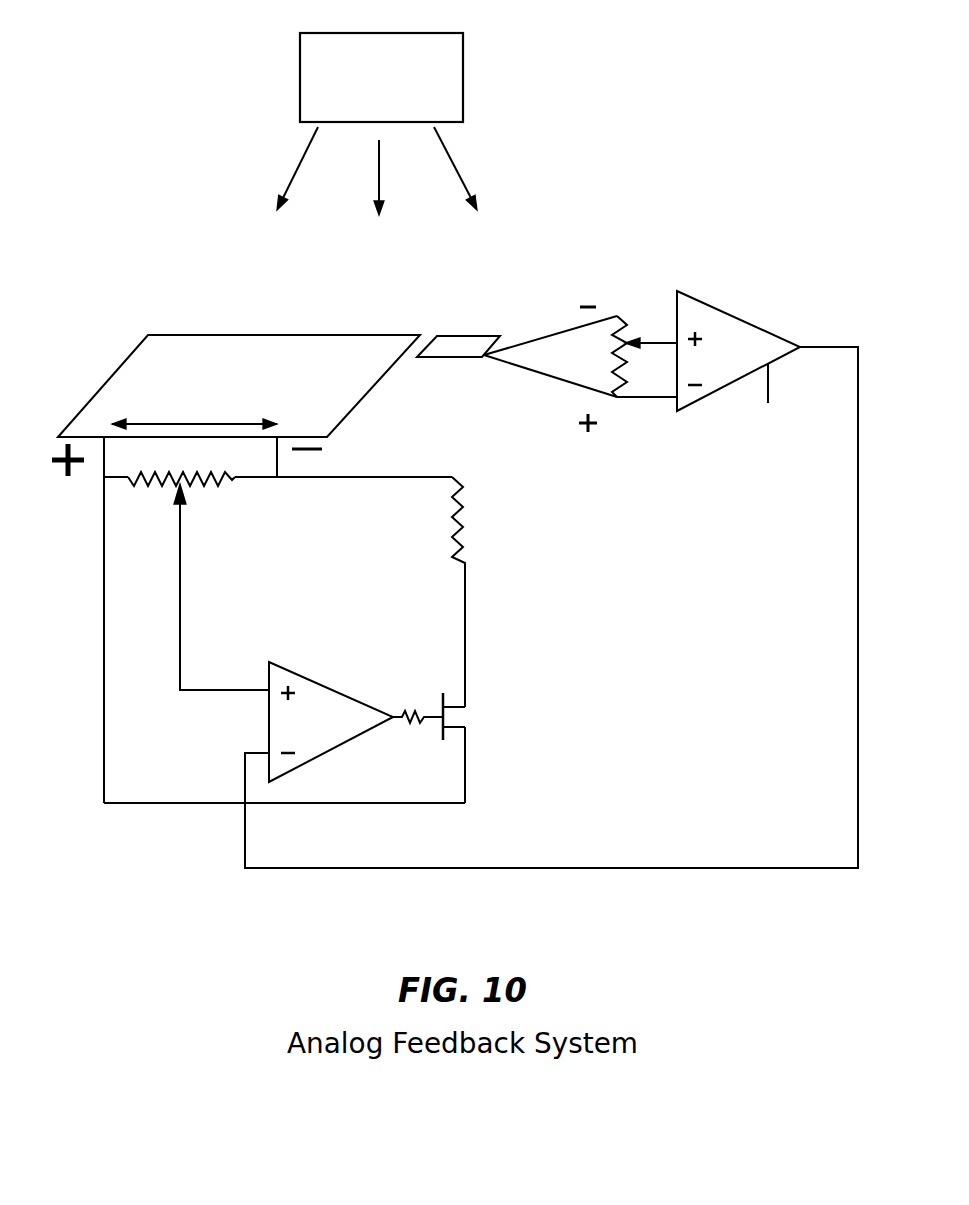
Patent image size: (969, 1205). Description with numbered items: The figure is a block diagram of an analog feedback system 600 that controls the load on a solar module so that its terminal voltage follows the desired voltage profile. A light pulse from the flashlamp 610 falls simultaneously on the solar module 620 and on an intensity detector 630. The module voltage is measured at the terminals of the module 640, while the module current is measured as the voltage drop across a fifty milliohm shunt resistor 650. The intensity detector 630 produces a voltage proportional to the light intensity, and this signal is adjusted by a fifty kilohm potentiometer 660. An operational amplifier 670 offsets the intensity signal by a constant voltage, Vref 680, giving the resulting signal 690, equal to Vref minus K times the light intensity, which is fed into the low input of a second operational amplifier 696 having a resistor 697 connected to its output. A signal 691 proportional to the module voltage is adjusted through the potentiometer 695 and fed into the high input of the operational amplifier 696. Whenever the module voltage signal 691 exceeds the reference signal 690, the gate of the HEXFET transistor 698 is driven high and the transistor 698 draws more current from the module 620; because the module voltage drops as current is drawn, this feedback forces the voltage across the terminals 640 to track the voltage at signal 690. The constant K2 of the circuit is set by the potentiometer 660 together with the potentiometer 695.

The analog feedback system 600 is at (170, 932).
The flashlamp 610 is at (463, 58).
The solar module 620 is at (118, 376).
The intensity detector 630 is at (483, 346).
The terminals of the module 640 is at (160, 424).
The shunt resistor 650 is at (466, 512).
The potentiometer 660 is at (626, 326).
The operational amplifier 670 is at (737, 320).
The Vref 680 is at (768, 448).
The signal 690 is at (673, 868).
The signal 691 is at (180, 632).
The potentiometer 695 is at (212, 482).
The operational amplifier 696 is at (337, 696).
The resistor 697 is at (412, 723).
The HEXFET transistor 698 is at (458, 718).